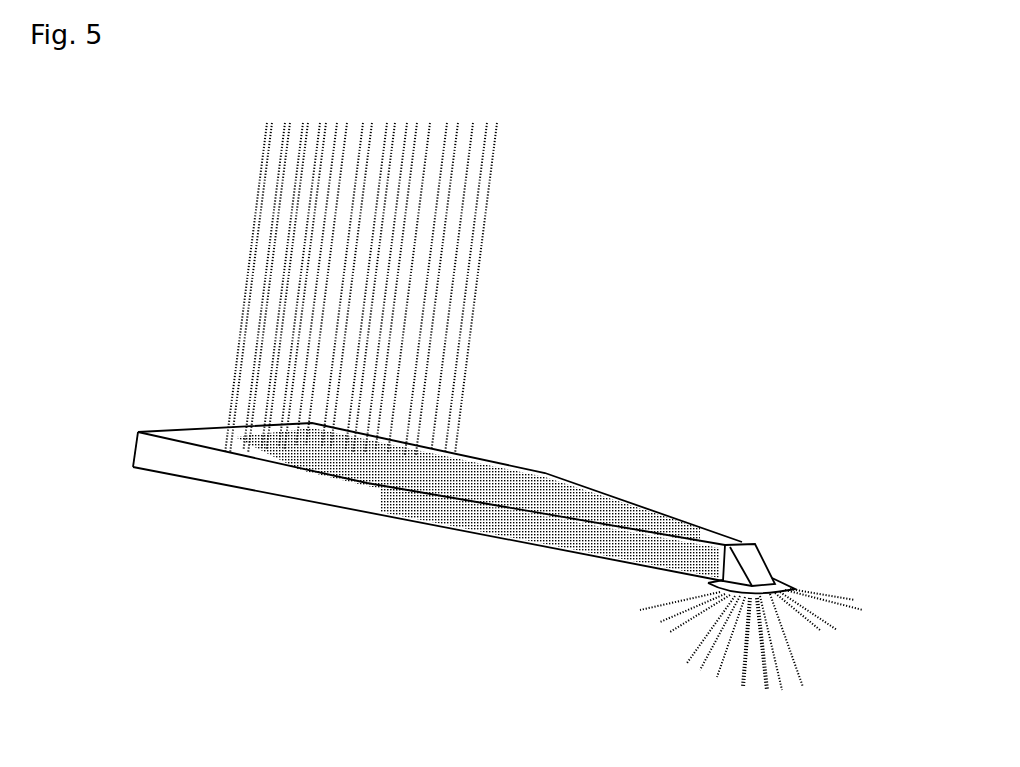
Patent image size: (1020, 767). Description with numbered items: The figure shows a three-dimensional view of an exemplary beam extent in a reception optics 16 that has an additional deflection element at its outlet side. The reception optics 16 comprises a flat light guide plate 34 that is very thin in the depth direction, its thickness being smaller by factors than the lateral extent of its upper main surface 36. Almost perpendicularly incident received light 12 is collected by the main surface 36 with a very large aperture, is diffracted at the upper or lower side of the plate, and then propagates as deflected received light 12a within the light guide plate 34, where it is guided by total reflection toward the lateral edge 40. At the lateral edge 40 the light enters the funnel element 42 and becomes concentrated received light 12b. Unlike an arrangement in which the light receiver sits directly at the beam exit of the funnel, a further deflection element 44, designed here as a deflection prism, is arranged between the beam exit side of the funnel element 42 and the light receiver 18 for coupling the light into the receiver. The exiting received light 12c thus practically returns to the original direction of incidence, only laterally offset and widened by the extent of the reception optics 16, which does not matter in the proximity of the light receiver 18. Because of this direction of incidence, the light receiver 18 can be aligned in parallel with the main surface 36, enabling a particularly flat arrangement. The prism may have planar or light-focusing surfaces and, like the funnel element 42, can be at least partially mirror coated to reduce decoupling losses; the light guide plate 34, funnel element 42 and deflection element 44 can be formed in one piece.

The received light 12 is at (417, 200).
The deflected received light 12a is at (348, 470).
The concentrated received light 12b is at (583, 530).
The exiting received light 12c is at (757, 627).
The reception optics 16 is at (673, 428).
The light receiver 18 is at (790, 588).
The light guide plate 34 is at (213, 467).
The main surface 36 is at (210, 435).
The lateral edge 40 is at (367, 483).
The funnel element 42 is at (653, 510).
The deflection element 44 is at (757, 567).